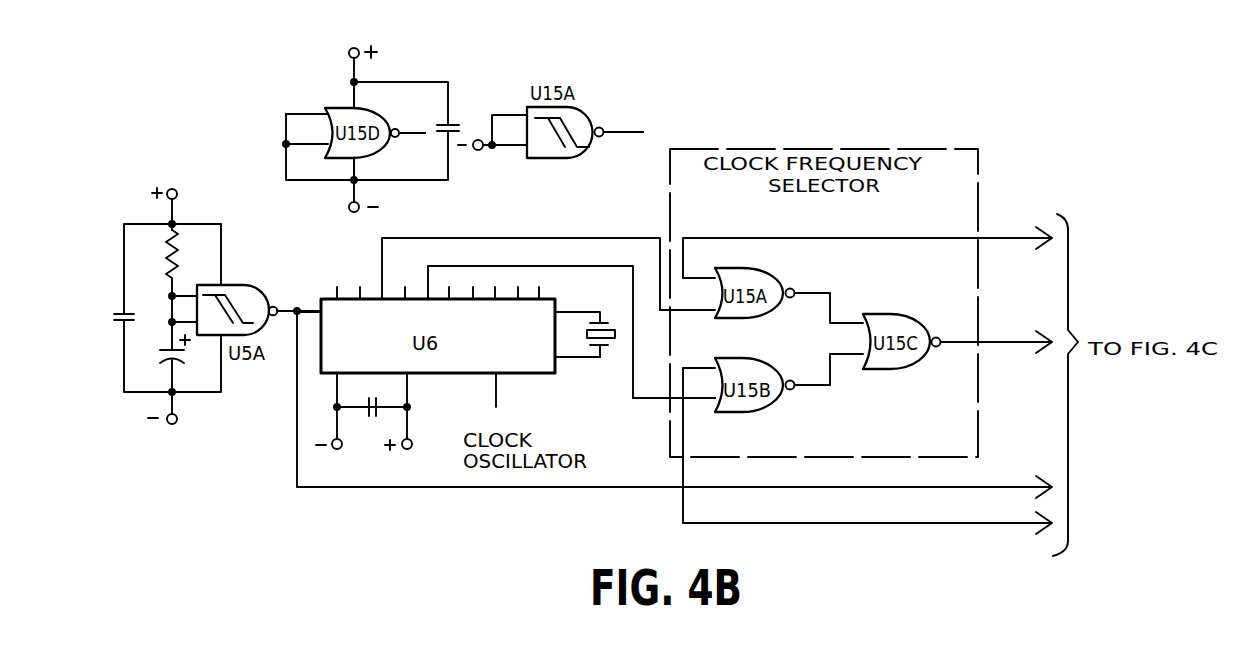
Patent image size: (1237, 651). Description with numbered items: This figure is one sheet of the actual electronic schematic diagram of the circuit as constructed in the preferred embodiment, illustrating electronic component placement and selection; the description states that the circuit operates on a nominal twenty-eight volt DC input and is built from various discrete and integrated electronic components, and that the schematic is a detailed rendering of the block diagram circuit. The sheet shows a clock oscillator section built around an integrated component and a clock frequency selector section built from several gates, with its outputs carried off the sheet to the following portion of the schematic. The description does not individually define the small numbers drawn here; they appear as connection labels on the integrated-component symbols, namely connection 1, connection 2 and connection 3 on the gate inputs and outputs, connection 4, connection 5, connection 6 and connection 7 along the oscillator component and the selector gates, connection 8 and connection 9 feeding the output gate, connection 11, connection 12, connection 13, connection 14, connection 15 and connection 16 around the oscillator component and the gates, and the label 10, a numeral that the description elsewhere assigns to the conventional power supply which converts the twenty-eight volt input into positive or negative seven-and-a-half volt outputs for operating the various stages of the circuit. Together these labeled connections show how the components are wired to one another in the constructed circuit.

The pin 1 is at (442, 276).
The pin 2 is at (442, 298).
The pin 3 is at (552, 290).
The pin 4 is at (597, 312).
The pin 5 is at (529, 319).
The pin 6 is at (551, 334).
The pin 7 is at (338, 228).
The pin 8 is at (589, 265).
The pin 9 is at (671, 266).
The power supply 10 is at (803, 232).
The pin 11 is at (507, 231).
The pin 12 is at (307, 203).
The pin 13 is at (367, 210).
The pin 14 is at (468, 238).
The pin 15 is at (463, 285).
The pin 16 is at (397, 406).